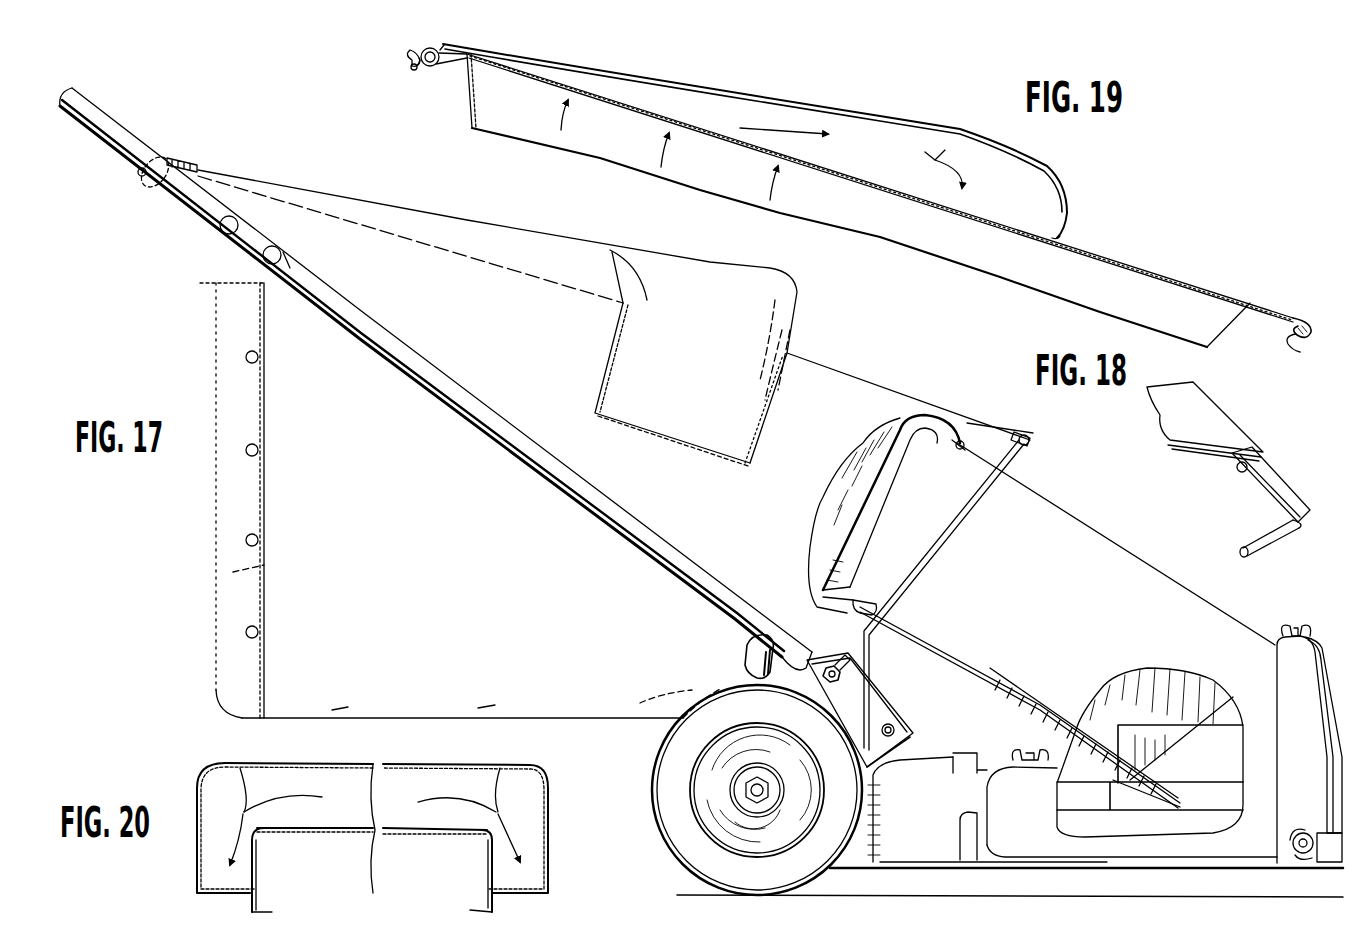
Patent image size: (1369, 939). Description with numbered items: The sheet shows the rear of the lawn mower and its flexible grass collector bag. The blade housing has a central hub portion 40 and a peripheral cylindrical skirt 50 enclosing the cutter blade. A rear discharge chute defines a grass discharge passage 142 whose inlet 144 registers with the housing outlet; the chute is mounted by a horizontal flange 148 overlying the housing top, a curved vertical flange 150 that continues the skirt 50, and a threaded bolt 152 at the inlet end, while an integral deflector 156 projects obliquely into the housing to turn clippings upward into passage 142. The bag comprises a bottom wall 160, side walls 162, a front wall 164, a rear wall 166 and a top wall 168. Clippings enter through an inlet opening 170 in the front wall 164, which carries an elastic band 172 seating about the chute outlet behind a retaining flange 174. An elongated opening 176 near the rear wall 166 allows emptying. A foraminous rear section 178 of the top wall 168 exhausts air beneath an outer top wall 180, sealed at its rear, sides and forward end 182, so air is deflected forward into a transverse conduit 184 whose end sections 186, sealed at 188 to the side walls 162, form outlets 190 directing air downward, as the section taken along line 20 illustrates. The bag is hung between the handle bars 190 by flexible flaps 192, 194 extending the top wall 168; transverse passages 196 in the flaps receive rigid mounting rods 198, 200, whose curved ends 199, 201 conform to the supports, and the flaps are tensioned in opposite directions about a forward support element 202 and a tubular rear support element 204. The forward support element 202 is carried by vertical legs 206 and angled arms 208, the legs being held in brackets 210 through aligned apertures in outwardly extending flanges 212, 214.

In FIG. 17, the section line 20— 20 is at (745, 262).
In FIG. 17, the hub portion 40 is at (842, 364).
In FIG. 17, the skirt 50 is at (905, 862).
In FIG. 17, the grass discharge passage 142 is at (1160, 684).
In FIG. 17, the inlet 144 is at (1262, 695).
In FIG. 17, the horizontal flange 148 is at (1075, 758).
In FIG. 17, the vertical flange 150 is at (1150, 866).
In FIG. 17, the threaded bolt 152 is at (1300, 858).
In FIG. 17, the deflector 156 is at (1155, 788).
In FIG. 17, the bottom wall 160 is at (585, 721).
In FIG. 17, the side walls 162 is at (484, 713).
In FIG. 20, the side walls 162 is at (254, 862).
In FIG. 19, the front wall 164 is at (1225, 340).
In FIG. 17, the front wall 164 is at (750, 682).
In FIG. 19, the rear wall 166 is at (467, 110).
In FIG. 17, the rear wall 166 is at (216, 545).
In FIG. 19, the top wall 168 is at (1132, 265).
In FIG. 17, the top wall 168 is at (920, 403).
In FIG. 20, the top wall 168 is at (390, 828).
In FIG. 17, the inlet opening 170 is at (852, 604).
In FIG. 17, the elastic band 172 is at (862, 606).
In FIG. 17, the flange 174 is at (900, 490).
In FIG. 17, the elongated opening 176 is at (264, 565).
In FIG. 19, the foraminous rear section 178 is at (716, 132).
In FIG. 17, the foraminous rear section 178 is at (552, 283).
In FIG. 19, the outer top wall 180 is at (838, 111).
In FIG. 17, the outer top wall 180 is at (258, 545).
In FIG. 20, the outer top wall 180 is at (328, 768).
In FIG. 19, the forward end 182 is at (1062, 238).
In FIG. 17, the transverse conduit 184 is at (800, 292).
In FIG. 17, the conduit end sections 186 is at (765, 412).
In FIG. 17, the seals 188 is at (605, 373).
In FIG. 17, the handle bars 190 is at (134, 136).
In FIG. 19, the front flexible flap 192 is at (1276, 311).
In FIG. 18, the front flexible flap 192 is at (1262, 452).
In FIG. 19, the rear flexible flap 194 is at (450, 48).
In FIG. 19, the transverse passages 196 is at (418, 55).
In FIG. 18, the transverse passages 196 is at (1238, 470).
In FIG. 19, the front mounting rod 198 is at (1304, 355).
In FIG. 18, the front mounting rod 198 is at (1256, 492).
In FIG. 17, the curved end 199 is at (1032, 445).
In FIG. 18, the curved end 199 is at (1300, 518).
In FIG. 19, the rear mounting rod 200 is at (414, 65).
In FIG. 17, the curved end 201 is at (138, 177).
In FIG. 18, the forward support element 202 is at (1280, 484).
In FIG. 19, the rear support element 204 is at (428, 68).
In FIG. 17, the vertical legs 206 is at (882, 700).
In FIG. 17, the arms 208 is at (965, 515).
In FIG. 17, the brackets 210 is at (900, 718).
In FIG. 17, the flange 212 is at (868, 672).
In FIG. 17, the flange 214 is at (895, 748).